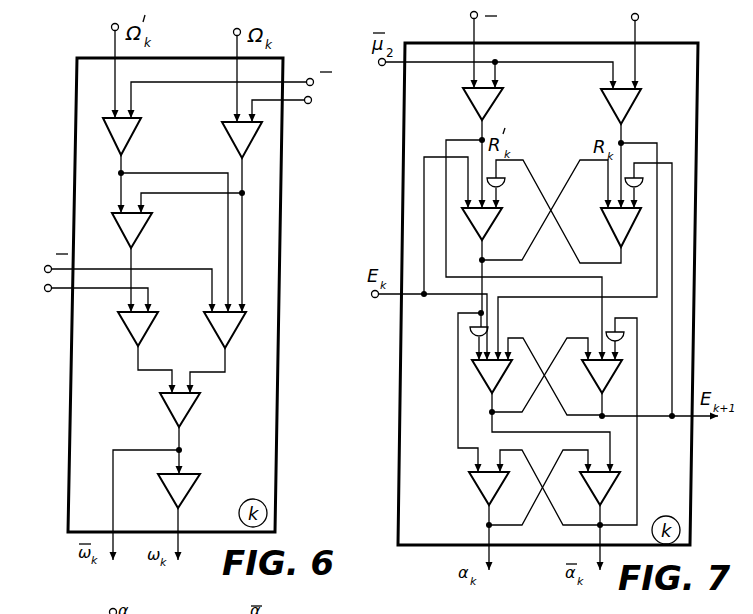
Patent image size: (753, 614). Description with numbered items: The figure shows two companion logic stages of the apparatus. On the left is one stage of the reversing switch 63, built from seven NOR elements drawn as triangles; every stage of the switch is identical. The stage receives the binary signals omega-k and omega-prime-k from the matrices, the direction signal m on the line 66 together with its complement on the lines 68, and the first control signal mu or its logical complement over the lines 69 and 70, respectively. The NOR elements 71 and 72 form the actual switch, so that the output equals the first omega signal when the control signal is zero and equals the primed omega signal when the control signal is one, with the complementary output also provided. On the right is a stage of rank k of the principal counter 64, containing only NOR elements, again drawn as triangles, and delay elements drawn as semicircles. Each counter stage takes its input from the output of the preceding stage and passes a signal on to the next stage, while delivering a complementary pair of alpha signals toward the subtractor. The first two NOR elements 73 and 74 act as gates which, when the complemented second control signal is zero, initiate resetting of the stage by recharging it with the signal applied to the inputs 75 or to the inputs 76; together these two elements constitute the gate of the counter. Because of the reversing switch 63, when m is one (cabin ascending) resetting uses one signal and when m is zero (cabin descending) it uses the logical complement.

In FIG. 6, the reversing switch 63 is at (280, 267).
In FIG. 7, the principal counter 64 is at (696, 276).
In FIG. 6, the line 66 is at (46, 292).
In FIG. 6, the lines 68 is at (46, 266).
In FIG. 6, the line 69 is at (300, 106).
In FIG. 6, the line 70 is at (298, 75).
In FIG. 6, the NOR element 71 is at (231, 138).
In FIG. 6, the NOR element 72 is at (126, 136).
In FIG. 7, the NOR element 73 is at (606, 105).
In FIG. 7, the NOR element 74 is at (496, 108).
In FIG. 7, the inputs 75 is at (629, 29).
In FIG. 7, the inputs 76 is at (468, 29).